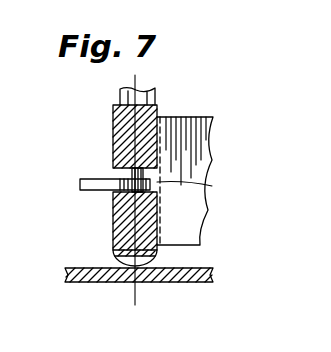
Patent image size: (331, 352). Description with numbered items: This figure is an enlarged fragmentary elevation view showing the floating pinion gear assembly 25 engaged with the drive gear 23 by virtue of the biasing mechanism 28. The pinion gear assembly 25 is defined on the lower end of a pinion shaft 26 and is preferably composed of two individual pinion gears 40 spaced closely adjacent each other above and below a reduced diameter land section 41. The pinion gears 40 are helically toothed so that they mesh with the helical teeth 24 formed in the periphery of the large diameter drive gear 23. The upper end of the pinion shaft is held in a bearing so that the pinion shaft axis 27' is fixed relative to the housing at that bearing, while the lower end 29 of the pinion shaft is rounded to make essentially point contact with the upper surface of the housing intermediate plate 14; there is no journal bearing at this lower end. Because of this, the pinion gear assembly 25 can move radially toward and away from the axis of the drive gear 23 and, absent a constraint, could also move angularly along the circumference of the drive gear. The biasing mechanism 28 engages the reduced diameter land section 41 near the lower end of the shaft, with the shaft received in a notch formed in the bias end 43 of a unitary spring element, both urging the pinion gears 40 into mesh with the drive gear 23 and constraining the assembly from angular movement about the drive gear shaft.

The intermediate plate 14 is at (200, 282).
The drive gear 23 is at (199, 126).
The helical teeth 24 is at (162, 115).
The pinion gear assembly 25 is at (113, 123).
The pinion shaft 26 is at (120, 96).
The pinion shaft axis 27' is at (105, 308).
The biasing mechanism 28 is at (82, 193).
The lower end of the pinion shaft 29 is at (153, 263).
The pinion gears 40 is at (113, 138).
The reduced diameter land section 41 is at (160, 186).
The bias end 43 is at (90, 179).